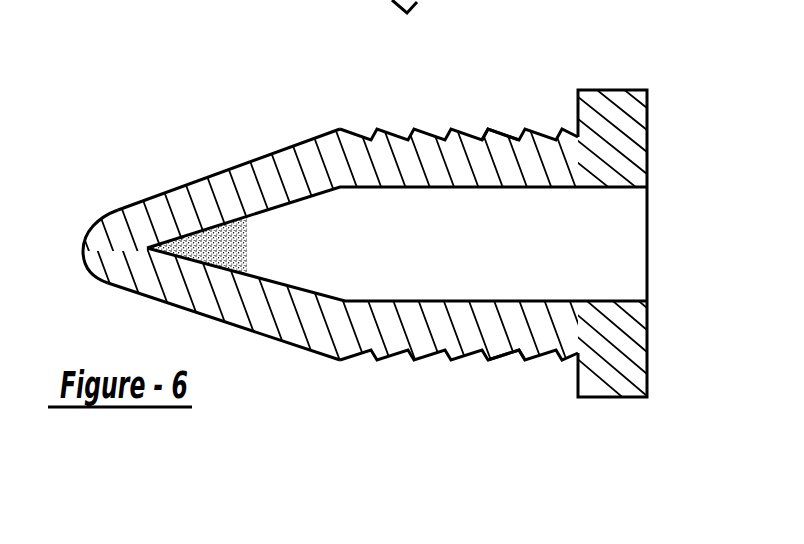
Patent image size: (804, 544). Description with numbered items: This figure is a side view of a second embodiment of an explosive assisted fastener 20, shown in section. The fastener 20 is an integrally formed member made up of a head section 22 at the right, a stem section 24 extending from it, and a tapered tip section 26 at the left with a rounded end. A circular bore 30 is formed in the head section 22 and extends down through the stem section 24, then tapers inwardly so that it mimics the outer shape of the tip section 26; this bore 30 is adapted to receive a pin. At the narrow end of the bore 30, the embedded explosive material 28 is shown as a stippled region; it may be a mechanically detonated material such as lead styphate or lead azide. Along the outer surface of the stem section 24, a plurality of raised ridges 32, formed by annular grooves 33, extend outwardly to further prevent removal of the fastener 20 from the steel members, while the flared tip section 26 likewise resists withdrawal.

The explosive assisted fastener 20 is at (216, 165).
The head section 22 is at (604, 89).
The stem section 24 is at (413, 139).
The tip section 26 is at (122, 210).
The embedded explosive material 28 is at (250, 246).
The circular bore 30 is at (397, 244).
The raised ridges 32 is at (440, 358).
The annular grooves 33 is at (505, 108).